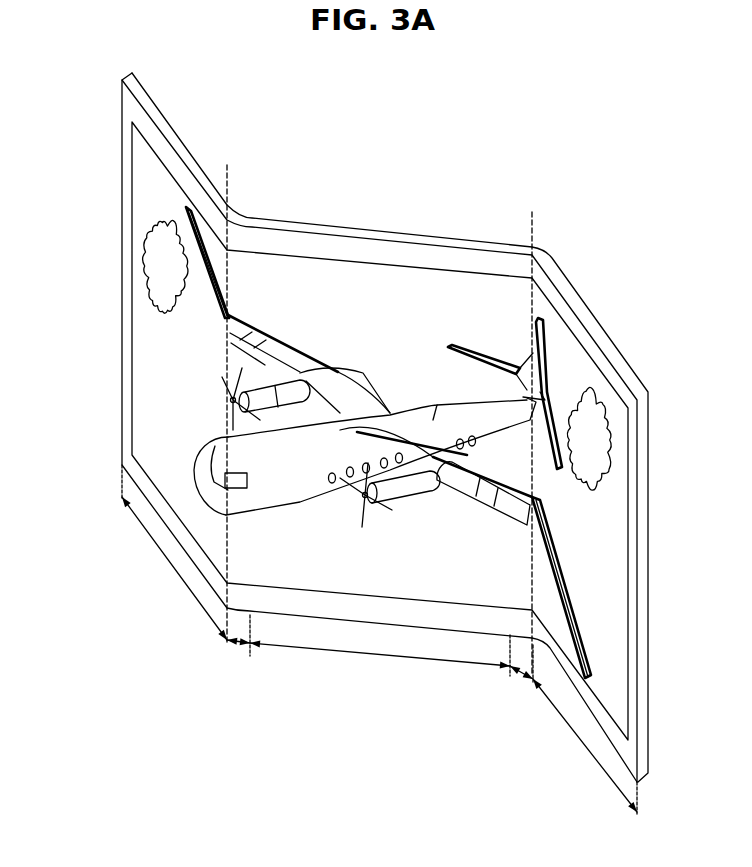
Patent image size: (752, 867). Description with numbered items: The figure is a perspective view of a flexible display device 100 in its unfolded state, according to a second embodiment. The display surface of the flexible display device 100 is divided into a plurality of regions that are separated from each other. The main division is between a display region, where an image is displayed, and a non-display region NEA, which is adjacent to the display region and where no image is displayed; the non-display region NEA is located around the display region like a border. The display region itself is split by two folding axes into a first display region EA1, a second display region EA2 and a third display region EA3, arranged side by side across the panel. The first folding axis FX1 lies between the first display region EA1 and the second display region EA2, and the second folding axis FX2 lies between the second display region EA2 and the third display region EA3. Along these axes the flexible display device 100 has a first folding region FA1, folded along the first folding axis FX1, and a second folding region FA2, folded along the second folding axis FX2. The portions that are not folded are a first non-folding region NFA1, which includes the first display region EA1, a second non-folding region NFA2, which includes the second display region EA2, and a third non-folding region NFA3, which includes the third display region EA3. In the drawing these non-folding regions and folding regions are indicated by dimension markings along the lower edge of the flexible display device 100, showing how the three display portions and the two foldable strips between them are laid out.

The flexible display device 100 is at (600, 152).
The non-display region NEA is at (122, 303).
The first display region EA1 is at (145, 378).
The second display region EA2 is at (325, 278).
The third display region EA3 is at (596, 578).
The first folding axis FX1 is at (226, 395).
The second folding axis FX2 is at (528, 434).
The first non-folding region NFA1 is at (174, 552).
The second non-folding region NFA2 is at (380, 658).
The third non-folding region NFA3 is at (585, 746).
The first folding region FA1 is at (233, 639).
The second folding region FA2 is at (522, 672).